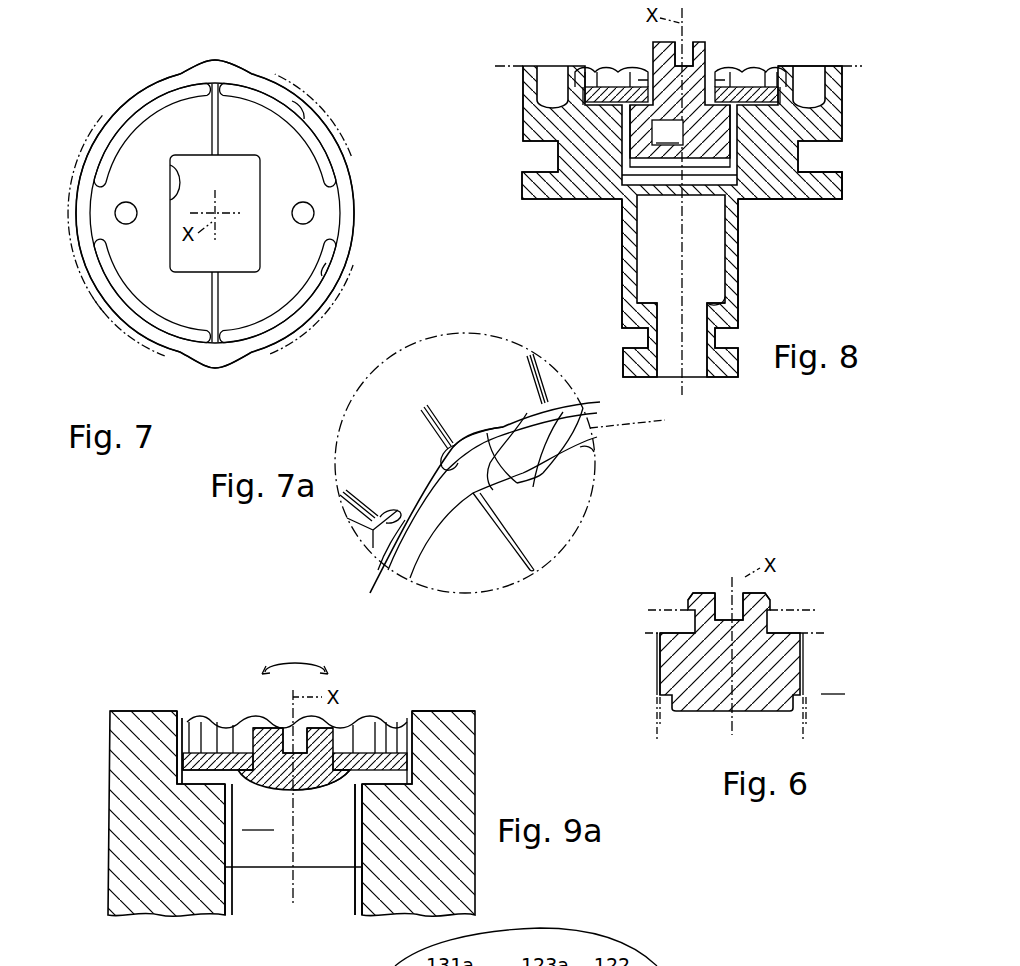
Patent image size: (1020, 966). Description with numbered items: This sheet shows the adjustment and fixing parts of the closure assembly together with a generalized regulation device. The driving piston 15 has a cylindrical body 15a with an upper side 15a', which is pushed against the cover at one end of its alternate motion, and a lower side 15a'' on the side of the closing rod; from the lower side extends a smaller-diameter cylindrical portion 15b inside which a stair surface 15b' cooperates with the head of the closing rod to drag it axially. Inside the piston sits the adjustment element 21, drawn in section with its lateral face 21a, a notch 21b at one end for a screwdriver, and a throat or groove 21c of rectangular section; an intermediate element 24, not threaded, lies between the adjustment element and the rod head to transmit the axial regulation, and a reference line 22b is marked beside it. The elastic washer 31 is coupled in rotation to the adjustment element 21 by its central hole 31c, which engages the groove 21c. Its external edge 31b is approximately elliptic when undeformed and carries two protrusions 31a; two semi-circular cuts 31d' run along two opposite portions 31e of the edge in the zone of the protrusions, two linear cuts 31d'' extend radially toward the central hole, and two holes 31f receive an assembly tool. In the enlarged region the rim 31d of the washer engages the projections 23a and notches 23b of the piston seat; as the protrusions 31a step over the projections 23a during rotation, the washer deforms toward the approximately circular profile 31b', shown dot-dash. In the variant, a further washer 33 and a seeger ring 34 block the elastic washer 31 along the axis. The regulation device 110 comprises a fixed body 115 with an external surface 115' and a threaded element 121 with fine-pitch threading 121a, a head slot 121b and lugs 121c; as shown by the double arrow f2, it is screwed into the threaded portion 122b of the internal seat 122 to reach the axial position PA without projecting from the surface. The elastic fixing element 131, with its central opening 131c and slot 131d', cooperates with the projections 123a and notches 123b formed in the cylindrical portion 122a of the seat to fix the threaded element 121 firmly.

In FIG. 8, the driving piston 15 is at (521, 79).
In FIG. 6, the driving piston 15 is at (752, 663).
In FIG. 8, the body of the driving piston 15a is at (655, 132).
In FIG. 7A, the body of the driving piston 15a is at (444, 451).
In FIG. 8, the upper side of the body 15a' is at (798, 41).
In FIG. 8, the lower side of the body 15a'' is at (790, 209).
In FIG. 8, the cylindrical portion of the driving piston 15b is at (645, 288).
In FIG. 8, the surface 15b' is at (756, 299).
In FIG. 8, the adjustment element 21 is at (680, 100).
In FIG. 6, the adjustment element 21 is at (800, 652).
In FIG. 6, the lateral face of cap 21a is at (659, 665).
In FIG. 8, the notch 21b is at (687, 45).
In FIG. 6, the notch 21b is at (724, 600).
In FIG. 6, the throat or groove 21c is at (676, 612).
In FIG. 6, the reference line 22b is at (664, 740).
In FIG. 7A, the projections 23a is at (488, 488).
In FIG. 7A, the notches 23b is at (436, 472).
In FIG. 6, the intermediate element 24 is at (800, 727).
In FIG. 7, the elastic washer 31 is at (88, 232).
In FIG. 8, the elastic washer 31 is at (608, 78).
In FIG. 7A, the elastic washer 31 is at (448, 571).
In FIG. 6, the elastic washer 31 is at (820, 612).
In FIG. 7, the protrusions 31a is at (212, 60).
In FIG. 7A, the protrusions 31a is at (461, 445).
In FIG. 7, the external edge 31b is at (188, 191).
In FIG. 7A, the external edge 31b is at (482, 487).
In FIG. 7, the circular external profile 31b' is at (234, 215).
In FIG. 7, the central hole 31c is at (183, 190).
In FIG. 7A, the ring rim 31d is at (386, 567).
In FIG. 7, the semi-circular cuts 31d' is at (318, 212).
In FIG. 7A, the semi-circular cuts 31d' is at (613, 457).
In FIG. 7, the linear cuts 31d'' is at (222, 213).
In FIG. 7A, the linear cuts 31d'' is at (540, 547).
In FIG. 7, the opposite portions of the external edge 31e is at (168, 76).
In FIG. 7, the holes 31f is at (127, 222).
In FIG. 8, the further washer 33 is at (640, 78).
In FIG. 8, the seeger ring 34 is at (712, 78).
In FIG. 9A, the regulation device 110 is at (82, 729).
In FIG. 9A, the support part or body 115 is at (257, 813).
In FIG. 9A, the external surface 115' is at (450, 684).
In FIG. 9A, the threaded element 121 is at (293, 821).
In FIG. 9A, the threading 121a is at (364, 826).
In FIG. 9A, the pin head slot 121b is at (293, 730).
In FIG. 9A, the pin head lugs 121c is at (262, 740).
In FIG. 9A, the internal seat 122 is at (178, 706).
In FIG. 9A, the portion of the internal seat 122a is at (183, 728).
In FIG. 9A, the threaded portion 122b is at (362, 890).
In FIG. 9A, the projections 123a is at (206, 730).
In FIG. 9A, the notches 123b is at (390, 730).
In FIG. 9A, the elastic fixing element or washer 131 is at (360, 758).
In FIG. 9A, the ring central opening 131c is at (316, 773).
In FIG. 9A, the ring slot 131d' is at (208, 791).
In FIG. 9A, the axial position PA is at (262, 868).
In FIG. 9A, the double arrow f2 is at (288, 664).